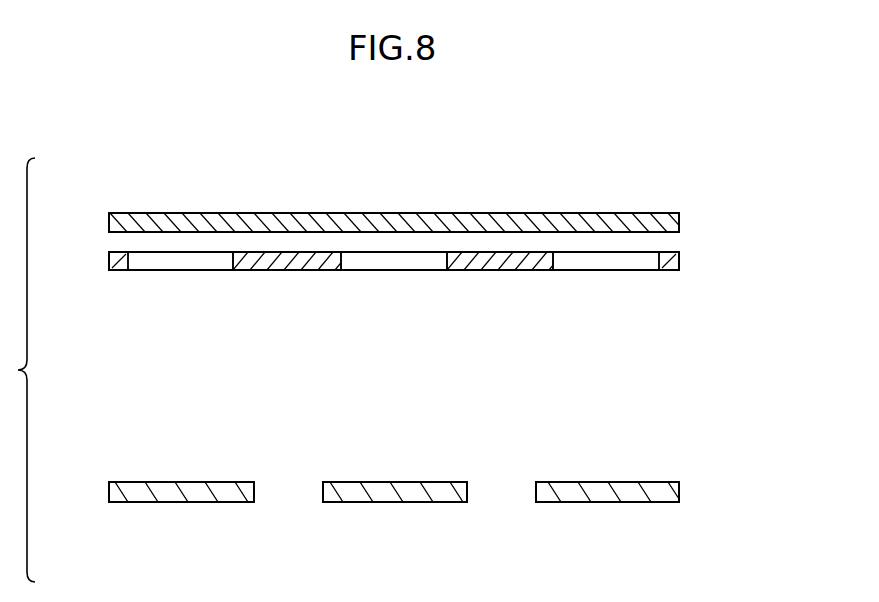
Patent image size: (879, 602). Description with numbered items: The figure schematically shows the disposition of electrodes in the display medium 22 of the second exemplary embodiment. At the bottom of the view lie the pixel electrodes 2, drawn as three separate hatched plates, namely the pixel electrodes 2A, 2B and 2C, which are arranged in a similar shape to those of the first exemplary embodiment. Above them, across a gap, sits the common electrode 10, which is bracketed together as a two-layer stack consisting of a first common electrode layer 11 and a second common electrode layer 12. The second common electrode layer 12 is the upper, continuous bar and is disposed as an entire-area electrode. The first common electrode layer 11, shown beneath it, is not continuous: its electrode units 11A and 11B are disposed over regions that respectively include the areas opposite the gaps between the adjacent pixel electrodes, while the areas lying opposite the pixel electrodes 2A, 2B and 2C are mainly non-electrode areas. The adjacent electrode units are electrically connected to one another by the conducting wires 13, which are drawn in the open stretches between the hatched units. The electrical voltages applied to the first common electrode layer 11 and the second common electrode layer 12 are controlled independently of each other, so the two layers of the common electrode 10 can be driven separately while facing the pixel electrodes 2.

The display medium 22 is at (692, 122).
The common electrode 10 is at (782, 187).
The second common electrode layer 12 is at (681, 220).
The first common electrode layer 11 is at (681, 258).
The electrode unit 11A is at (288, 262).
The electrode unit 11B is at (500, 262).
The conducting wire 13 is at (180, 262).
The pixel electrodes 2 is at (681, 490).
The pixel electrode 2A is at (179, 502).
The pixel electrode 2B is at (393, 502).
The pixel electrode 2C is at (607, 502).